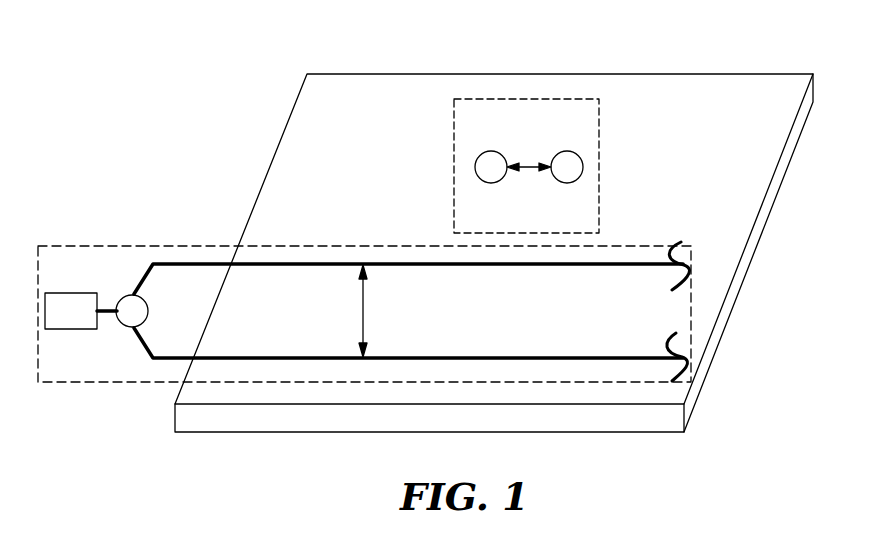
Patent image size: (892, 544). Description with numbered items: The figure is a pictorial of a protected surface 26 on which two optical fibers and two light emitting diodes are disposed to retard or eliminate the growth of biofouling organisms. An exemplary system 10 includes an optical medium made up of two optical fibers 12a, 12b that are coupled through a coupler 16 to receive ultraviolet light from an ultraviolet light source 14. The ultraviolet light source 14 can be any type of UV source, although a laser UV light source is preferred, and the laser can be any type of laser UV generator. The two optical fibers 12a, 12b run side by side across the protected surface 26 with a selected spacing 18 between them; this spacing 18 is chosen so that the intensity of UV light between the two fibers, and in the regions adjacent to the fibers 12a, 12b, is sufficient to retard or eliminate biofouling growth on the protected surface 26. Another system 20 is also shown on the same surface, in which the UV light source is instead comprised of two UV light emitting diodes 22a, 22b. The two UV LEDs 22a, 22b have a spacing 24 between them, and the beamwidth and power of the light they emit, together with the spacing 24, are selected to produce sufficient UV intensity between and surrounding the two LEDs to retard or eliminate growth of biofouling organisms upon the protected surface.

The system 10 is at (313, 246).
The optical fiber 12a is at (622, 268).
The optical fiber 12b is at (520, 357).
The ultraviolet light source 14 is at (73, 293).
The coupler 16 is at (148, 309).
The spacing 18 is at (365, 311).
The system 20 is at (600, 120).
The UV light emitting diode 22a is at (491, 151).
The UV light emitting diode 22b is at (567, 151).
The spacing 24 is at (528, 169).
The protected surface 26 is at (347, 124).